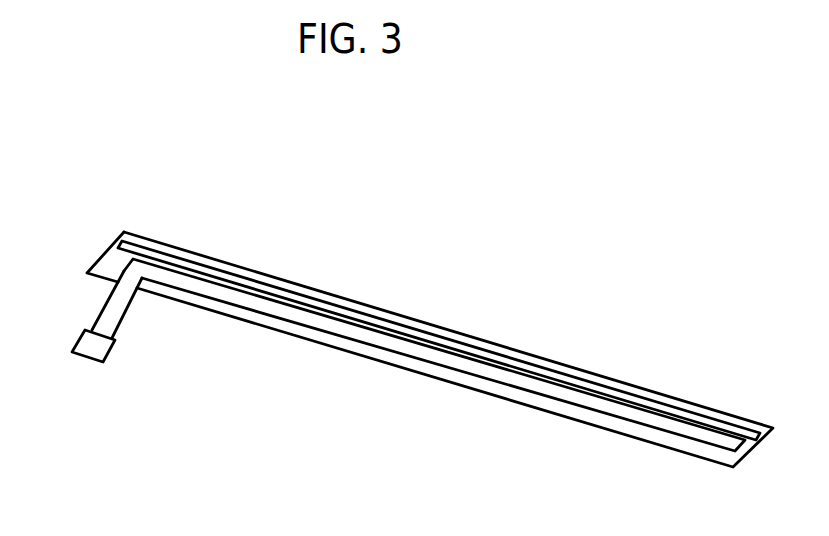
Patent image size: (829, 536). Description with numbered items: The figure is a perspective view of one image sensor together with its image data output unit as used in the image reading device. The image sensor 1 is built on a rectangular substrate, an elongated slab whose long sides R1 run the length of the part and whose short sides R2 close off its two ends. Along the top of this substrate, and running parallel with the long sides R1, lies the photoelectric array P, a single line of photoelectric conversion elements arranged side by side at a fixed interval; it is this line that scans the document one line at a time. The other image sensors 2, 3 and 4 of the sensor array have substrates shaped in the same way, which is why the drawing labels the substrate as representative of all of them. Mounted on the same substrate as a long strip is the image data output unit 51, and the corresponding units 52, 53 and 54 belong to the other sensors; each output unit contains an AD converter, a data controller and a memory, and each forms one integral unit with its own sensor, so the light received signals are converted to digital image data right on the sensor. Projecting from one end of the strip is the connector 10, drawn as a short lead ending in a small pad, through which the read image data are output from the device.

The image sensor 1 is at (430, 337).
The image sensor 2 is at (430, 337).
The image sensor 3 is at (430, 337).
The image sensor 4 is at (430, 337).
The image data output unit 51 is at (434, 355).
The image data output unit 52 is at (434, 355).
The image data output unit 53 is at (434, 355).
The image data output unit 54 is at (275, 306).
The connector 10 is at (105, 355).
The photoelectric array P is at (217, 269).
The long sides R1 is at (148, 238).
The short sides R2 is at (104, 252).